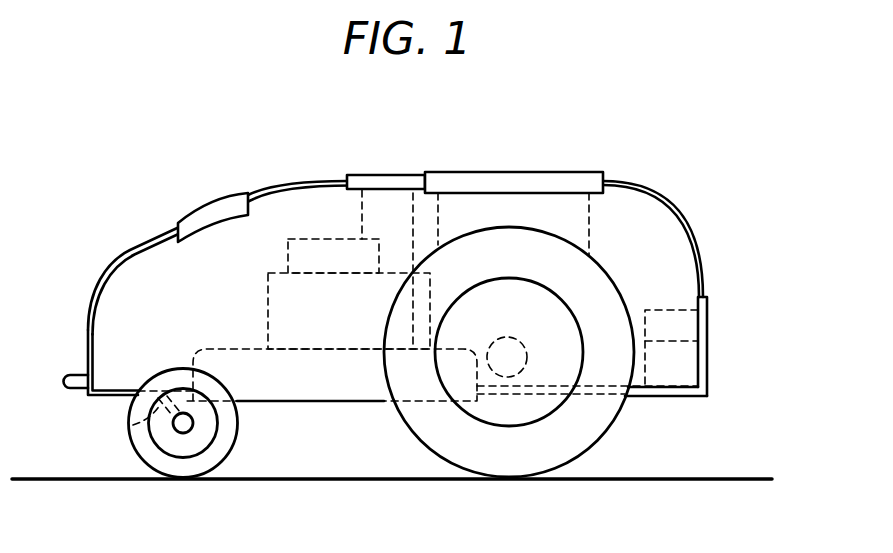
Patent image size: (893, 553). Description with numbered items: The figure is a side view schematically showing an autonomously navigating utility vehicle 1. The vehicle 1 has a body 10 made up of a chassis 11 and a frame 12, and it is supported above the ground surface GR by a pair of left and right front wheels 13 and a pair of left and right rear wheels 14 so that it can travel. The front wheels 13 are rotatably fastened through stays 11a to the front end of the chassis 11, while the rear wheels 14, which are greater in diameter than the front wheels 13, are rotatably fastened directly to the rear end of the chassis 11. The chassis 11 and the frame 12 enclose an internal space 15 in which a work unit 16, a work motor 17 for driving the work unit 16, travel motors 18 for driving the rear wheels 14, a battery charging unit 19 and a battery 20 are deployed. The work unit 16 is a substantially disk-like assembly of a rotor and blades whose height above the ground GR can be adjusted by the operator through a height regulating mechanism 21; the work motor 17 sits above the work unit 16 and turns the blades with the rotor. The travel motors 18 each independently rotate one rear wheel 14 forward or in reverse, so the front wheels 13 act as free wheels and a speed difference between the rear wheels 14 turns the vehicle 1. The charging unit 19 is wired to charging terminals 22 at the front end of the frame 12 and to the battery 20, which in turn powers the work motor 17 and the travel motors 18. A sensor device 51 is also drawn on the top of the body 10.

The autonomously navigating utility vehicle 1 is at (669, 181).
The body 10 is at (448, 349).
The chassis 11 is at (708, 366).
The stays 11a is at (133, 425).
The frame 12 is at (708, 298).
The front wheels 13 is at (130, 451).
The rear wheels 14 is at (410, 430).
The internal space 15 is at (672, 238).
The work unit 16 is at (310, 389).
The work motor 17 is at (335, 321).
The travel motors 18 is at (505, 336).
The battery charging unit 19 is at (683, 340).
The battery 20 is at (683, 375).
The height regulating mechanism 21 is at (343, 271).
The charging terminals 22 is at (76, 374).
The camera 51 is at (222, 194).
The ground surface GR is at (645, 478).